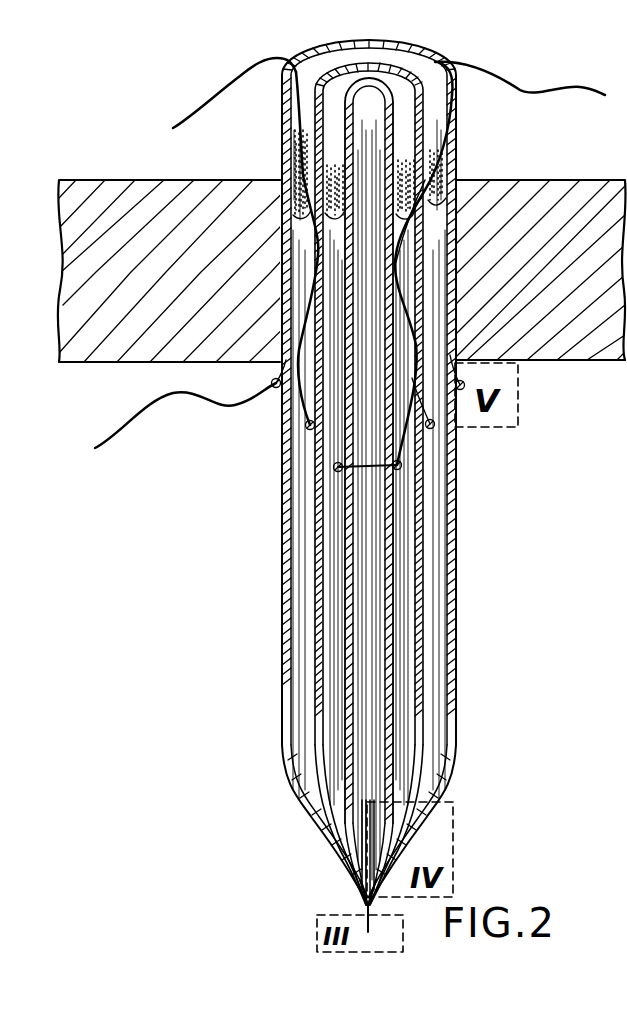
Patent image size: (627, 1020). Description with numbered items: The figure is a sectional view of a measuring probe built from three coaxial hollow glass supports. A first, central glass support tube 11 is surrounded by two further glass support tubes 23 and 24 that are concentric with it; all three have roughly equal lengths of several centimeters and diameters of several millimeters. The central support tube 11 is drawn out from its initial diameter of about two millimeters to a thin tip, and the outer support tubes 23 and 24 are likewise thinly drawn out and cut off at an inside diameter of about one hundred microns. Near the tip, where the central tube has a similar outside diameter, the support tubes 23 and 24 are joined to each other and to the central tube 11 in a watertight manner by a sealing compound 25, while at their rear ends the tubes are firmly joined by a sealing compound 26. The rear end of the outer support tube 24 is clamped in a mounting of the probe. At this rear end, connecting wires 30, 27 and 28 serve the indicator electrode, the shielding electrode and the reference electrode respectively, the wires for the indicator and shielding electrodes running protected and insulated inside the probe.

The central glass support tube 11 is at (393, 578).
The glass support tube 23 is at (426, 598).
The glass support tube 24 is at (453, 631).
The sealing compound 25 is at (320, 840).
The sealing compound 26 is at (325, 178).
The connecting wire 27 is at (307, 428).
The connecting wire 28 is at (274, 388).
The connecting wire 30 is at (338, 468).